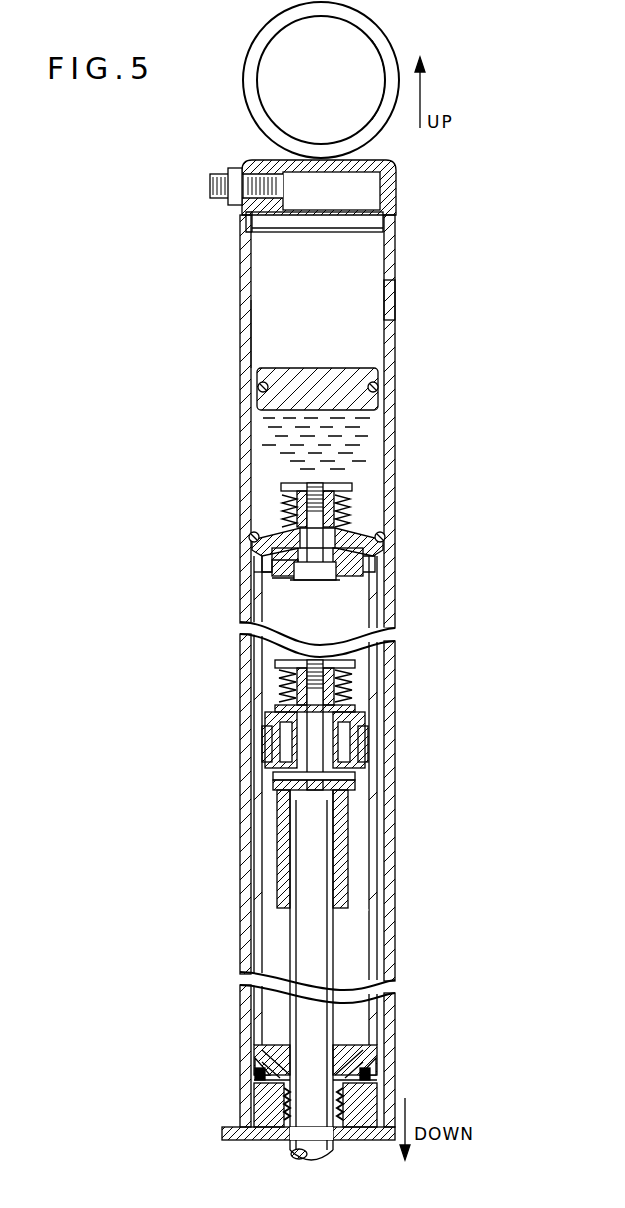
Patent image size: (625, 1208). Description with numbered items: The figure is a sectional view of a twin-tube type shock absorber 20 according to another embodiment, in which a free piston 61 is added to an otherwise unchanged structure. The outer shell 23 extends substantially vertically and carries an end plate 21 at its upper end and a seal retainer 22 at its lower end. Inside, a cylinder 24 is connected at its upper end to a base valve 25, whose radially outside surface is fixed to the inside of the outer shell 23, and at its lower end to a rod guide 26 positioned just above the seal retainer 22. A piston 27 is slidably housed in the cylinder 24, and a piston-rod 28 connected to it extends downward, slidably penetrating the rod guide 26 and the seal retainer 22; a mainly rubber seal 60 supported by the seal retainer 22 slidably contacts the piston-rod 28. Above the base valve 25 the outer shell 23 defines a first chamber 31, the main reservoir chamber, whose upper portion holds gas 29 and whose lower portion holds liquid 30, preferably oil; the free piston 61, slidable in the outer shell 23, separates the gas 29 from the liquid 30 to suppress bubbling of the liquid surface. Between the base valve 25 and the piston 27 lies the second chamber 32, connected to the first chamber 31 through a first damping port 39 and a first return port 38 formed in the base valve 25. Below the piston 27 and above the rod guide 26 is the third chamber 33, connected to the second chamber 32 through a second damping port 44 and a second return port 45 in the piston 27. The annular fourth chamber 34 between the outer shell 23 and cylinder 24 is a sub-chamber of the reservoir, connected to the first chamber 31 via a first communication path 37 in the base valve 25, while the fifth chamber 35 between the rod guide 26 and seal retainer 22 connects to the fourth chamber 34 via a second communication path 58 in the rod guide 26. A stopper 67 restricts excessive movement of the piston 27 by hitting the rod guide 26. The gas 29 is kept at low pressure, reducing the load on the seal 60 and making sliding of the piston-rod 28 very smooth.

The twin-tube type shock absorber 20 is at (404, 302).
The end plate 21 is at (386, 150).
The seal retainer 22 is at (362, 1092).
The outer shell 23 is at (387, 452).
The cylinder 24 is at (379, 614).
The base valve 25 is at (252, 543).
The rod guide 26 is at (360, 1023).
The piston 27 is at (366, 722).
The piston-rod 28 is at (322, 950).
The gas 29 is at (370, 257).
The liquid 30 is at (380, 400).
The first chamber 31 is at (373, 352).
The second chamber 32 is at (352, 577).
The third chamber 33 is at (358, 922).
The fourth chamber 34 is at (377, 590).
The fifth chamber 35 is at (358, 1048).
The first communication path 37 is at (374, 528).
The first return port 38 is at (386, 546).
The first damping port 39 is at (260, 555).
The second damping port 44 is at (272, 722).
The second return port 45 is at (352, 745).
The second communication path 58 is at (252, 1070).
The seal 60 is at (258, 1096).
The free piston 61 is at (262, 382).
The stopper 67 is at (356, 815).